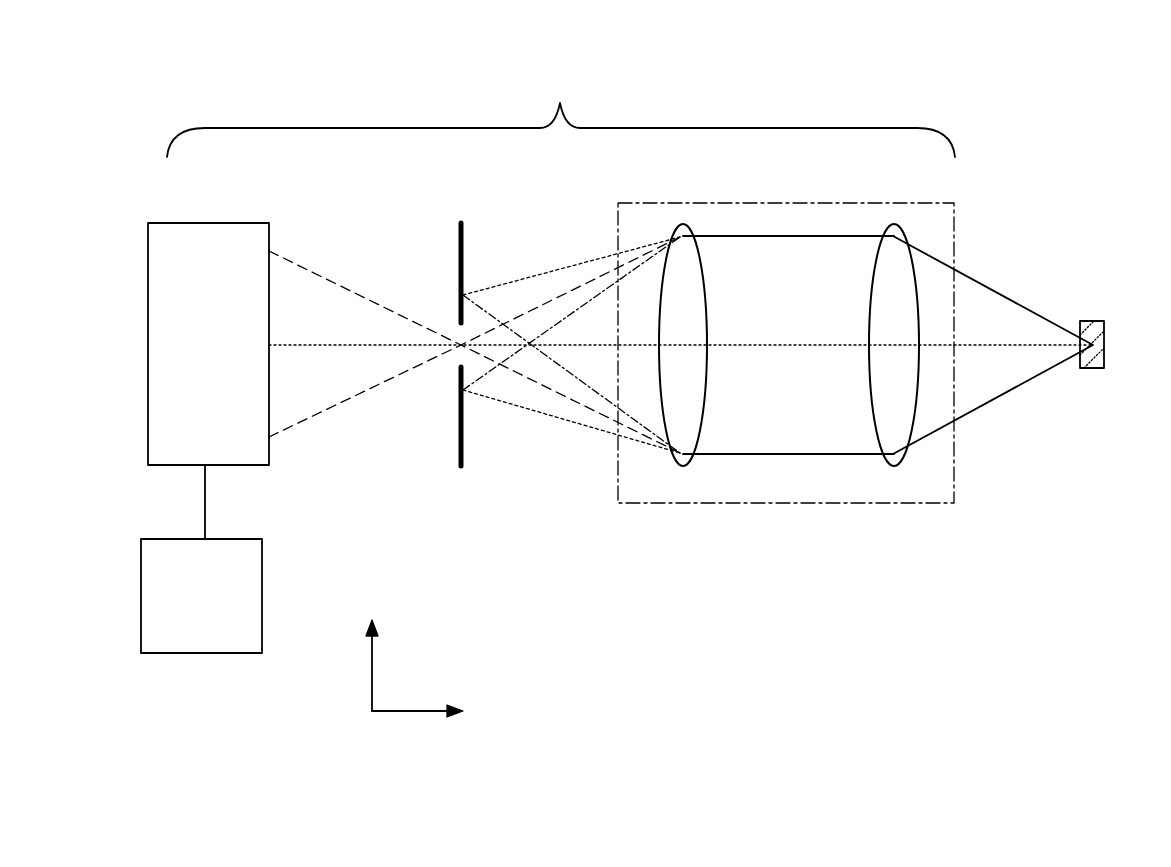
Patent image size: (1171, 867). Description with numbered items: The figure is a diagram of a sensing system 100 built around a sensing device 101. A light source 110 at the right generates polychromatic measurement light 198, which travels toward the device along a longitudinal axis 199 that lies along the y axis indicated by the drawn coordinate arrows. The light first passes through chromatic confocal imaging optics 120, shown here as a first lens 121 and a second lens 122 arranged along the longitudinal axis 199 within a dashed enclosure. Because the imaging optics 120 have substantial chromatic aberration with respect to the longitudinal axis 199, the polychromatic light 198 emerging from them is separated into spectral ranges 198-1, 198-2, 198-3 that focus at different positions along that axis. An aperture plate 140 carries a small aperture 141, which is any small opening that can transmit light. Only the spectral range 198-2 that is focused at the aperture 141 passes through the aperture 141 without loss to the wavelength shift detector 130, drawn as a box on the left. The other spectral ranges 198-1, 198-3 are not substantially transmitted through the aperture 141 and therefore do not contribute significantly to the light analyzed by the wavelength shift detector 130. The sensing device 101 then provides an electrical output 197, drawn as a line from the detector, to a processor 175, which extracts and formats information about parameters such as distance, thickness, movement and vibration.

The sensing system 100 is at (157, 127).
The sensing device 101 is at (561, 112).
The light source 110 is at (1093, 325).
The chromatic confocal imaging optics 120 is at (823, 200).
The first lens 121 is at (692, 317).
The second lens 122 is at (878, 297).
The wavelength shift detector 130 is at (165, 283).
The aperture plate 140 is at (467, 223).
The aperture 141 is at (458, 357).
The processor 175 is at (248, 590).
The electrical output 197 is at (205, 511).
The polychromatic measurement light 198 is at (997, 300).
The spectral range 198-1 is at (573, 262).
The spectral range 198-2 is at (308, 265).
The spectral range 198-3 is at (573, 378).
The longitudinal axis 199 is at (288, 343).